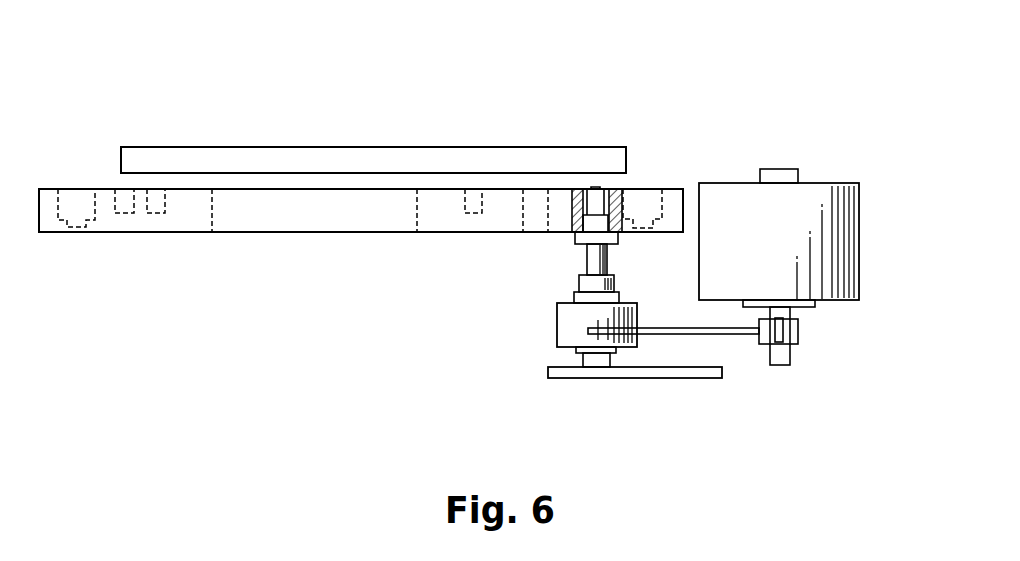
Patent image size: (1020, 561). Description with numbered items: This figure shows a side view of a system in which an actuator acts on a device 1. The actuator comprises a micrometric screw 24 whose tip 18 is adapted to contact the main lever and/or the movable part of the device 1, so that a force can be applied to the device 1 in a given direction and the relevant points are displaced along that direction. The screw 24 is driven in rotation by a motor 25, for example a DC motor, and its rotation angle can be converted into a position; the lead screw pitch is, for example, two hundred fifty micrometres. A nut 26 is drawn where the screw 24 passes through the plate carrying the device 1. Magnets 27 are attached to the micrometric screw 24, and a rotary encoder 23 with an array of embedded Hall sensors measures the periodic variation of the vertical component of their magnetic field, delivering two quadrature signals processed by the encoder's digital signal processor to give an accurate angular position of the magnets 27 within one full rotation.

The device 1 is at (302, 160).
The tip 18 is at (600, 187).
The rotary encoder 23 is at (659, 372).
The micrometric screw 24 is at (603, 258).
The motor 25 is at (852, 245).
The nut 26 is at (575, 236).
The magnets 27 is at (578, 352).